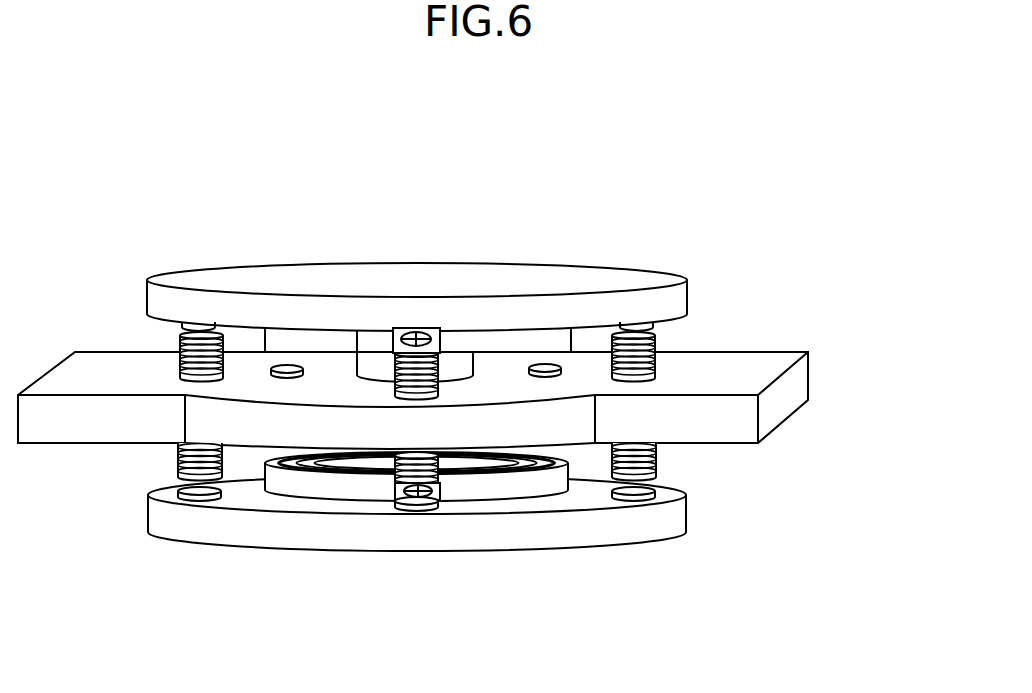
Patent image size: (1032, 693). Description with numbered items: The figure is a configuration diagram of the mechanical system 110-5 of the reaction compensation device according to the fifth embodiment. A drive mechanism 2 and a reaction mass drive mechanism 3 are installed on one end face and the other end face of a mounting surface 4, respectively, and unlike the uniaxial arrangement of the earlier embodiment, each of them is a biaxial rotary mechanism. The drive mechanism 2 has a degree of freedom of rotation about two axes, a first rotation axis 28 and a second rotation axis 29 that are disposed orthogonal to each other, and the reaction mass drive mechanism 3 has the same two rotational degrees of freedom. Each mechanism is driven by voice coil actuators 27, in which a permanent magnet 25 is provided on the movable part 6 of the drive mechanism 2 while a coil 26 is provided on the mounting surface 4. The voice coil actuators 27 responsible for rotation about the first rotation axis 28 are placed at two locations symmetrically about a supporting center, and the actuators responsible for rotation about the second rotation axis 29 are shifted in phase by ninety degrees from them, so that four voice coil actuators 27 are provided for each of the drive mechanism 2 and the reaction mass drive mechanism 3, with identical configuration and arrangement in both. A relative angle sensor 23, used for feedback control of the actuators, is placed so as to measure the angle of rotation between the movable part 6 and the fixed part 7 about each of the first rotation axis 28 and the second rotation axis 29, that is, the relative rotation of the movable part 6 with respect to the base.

The mechanical system 110-5 is at (480, 359).
The drive mechanism 2 is at (501, 229).
The reaction mass drive mechanism 3 is at (502, 547).
The mounting surface 4 is at (770, 420).
The movable part 6 is at (410, 338).
The fixed part 7 is at (372, 365).
The relative angle sensor 23 is at (545, 345).
The permanent magnet 25 is at (440, 331).
The coil 26 is at (658, 362).
The voice coil actuator 27 is at (768, 223).
The first rotation axis 28 is at (432, 293).
The second rotation axis 29 is at (495, 537).